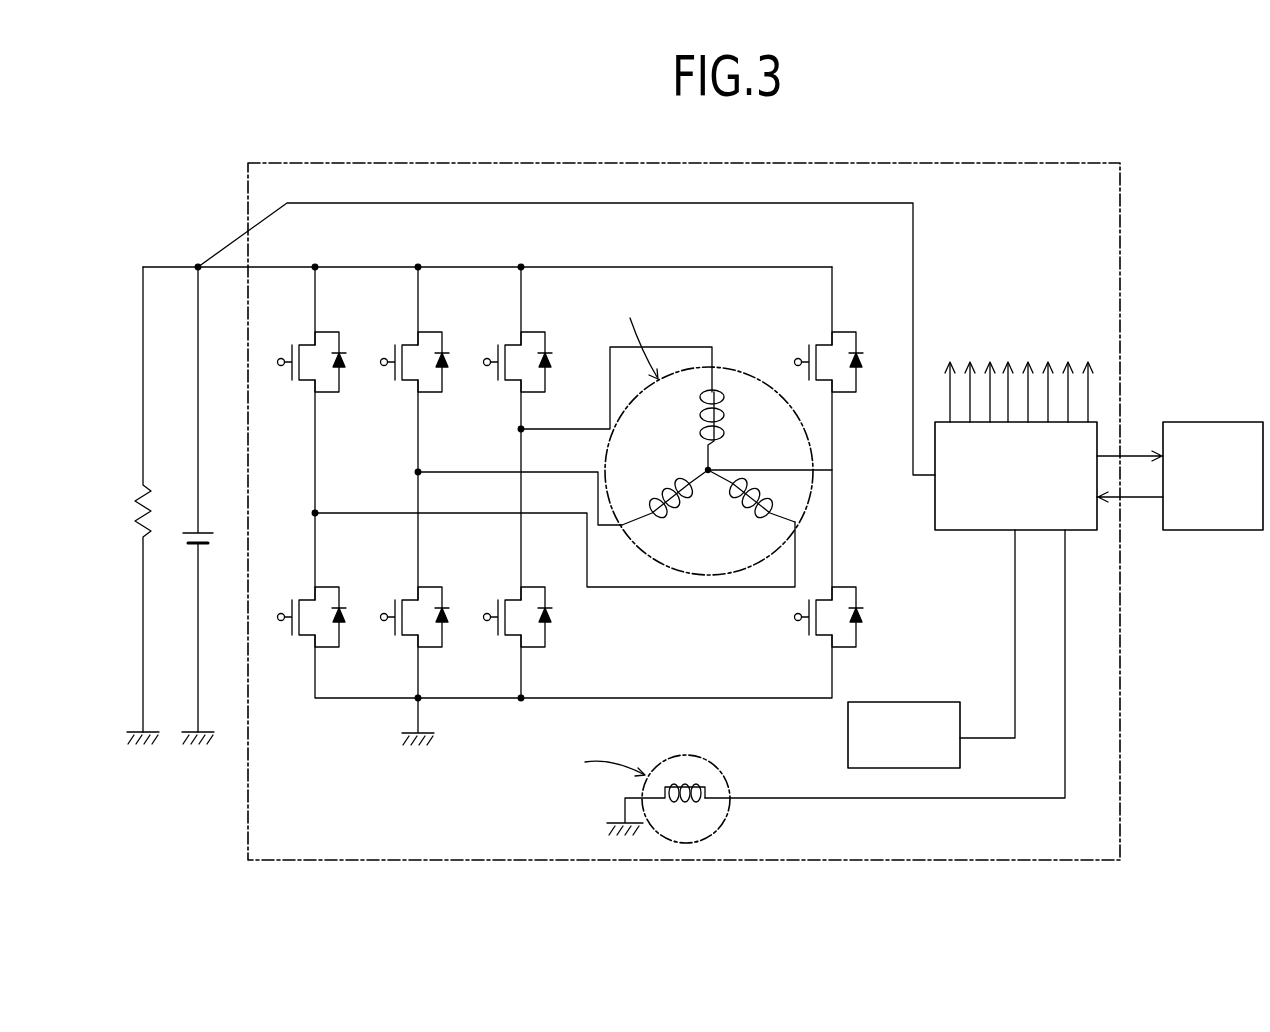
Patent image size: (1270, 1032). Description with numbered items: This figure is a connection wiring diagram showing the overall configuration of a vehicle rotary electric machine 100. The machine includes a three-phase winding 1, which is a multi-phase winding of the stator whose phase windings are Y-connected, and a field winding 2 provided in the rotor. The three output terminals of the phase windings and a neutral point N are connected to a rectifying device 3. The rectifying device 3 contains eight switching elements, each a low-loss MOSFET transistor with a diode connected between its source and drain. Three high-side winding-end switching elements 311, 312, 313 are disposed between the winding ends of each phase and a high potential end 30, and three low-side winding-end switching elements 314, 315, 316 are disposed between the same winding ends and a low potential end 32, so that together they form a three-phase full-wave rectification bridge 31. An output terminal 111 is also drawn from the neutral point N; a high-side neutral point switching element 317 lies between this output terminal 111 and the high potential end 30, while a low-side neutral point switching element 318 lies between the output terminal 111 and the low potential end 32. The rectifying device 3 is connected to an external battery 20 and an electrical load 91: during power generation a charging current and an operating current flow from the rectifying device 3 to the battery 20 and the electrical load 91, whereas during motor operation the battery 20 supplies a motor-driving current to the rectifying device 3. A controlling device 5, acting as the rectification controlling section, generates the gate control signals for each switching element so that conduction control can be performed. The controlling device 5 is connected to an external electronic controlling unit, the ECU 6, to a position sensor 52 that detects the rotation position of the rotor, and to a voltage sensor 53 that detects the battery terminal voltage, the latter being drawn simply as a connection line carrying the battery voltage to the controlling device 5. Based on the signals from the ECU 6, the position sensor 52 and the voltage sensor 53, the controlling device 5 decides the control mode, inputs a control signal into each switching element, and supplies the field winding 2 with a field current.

The rotary electric machine 100 is at (1055, 163).
The voltage sensor 53 is at (873, 203).
The high potential end 30 is at (280, 265).
The electrical load 91 is at (150, 492).
The battery 20 is at (200, 531).
The three-phase full-wave rectification bridge 31 is at (478, 266).
The high-side winding-end switching element 311 is at (318, 330).
The high-side winding-end switching element 312 is at (421, 330).
The high-side winding-end switching element 313 is at (524, 330).
The low-side winding-end switching element 314 is at (318, 585).
The low-side winding-end switching element 315 is at (421, 585).
The low-side winding-end switching element 316 is at (524, 585).
The high-side neutral point switching element 317 is at (835, 330).
The low-side neutral point switching element 318 is at (835, 586).
The low potential end 32 is at (419, 715).
The rectifying device 3 is at (767, 266).
The three-phase winding 1 is at (719, 395).
The output terminal 111 is at (834, 470).
The controlling device 5 is at (965, 530).
The electronic controlling unit (ECU) 6 is at (1218, 422).
The position sensor 52 is at (905, 702).
The field winding 2 is at (691, 787).